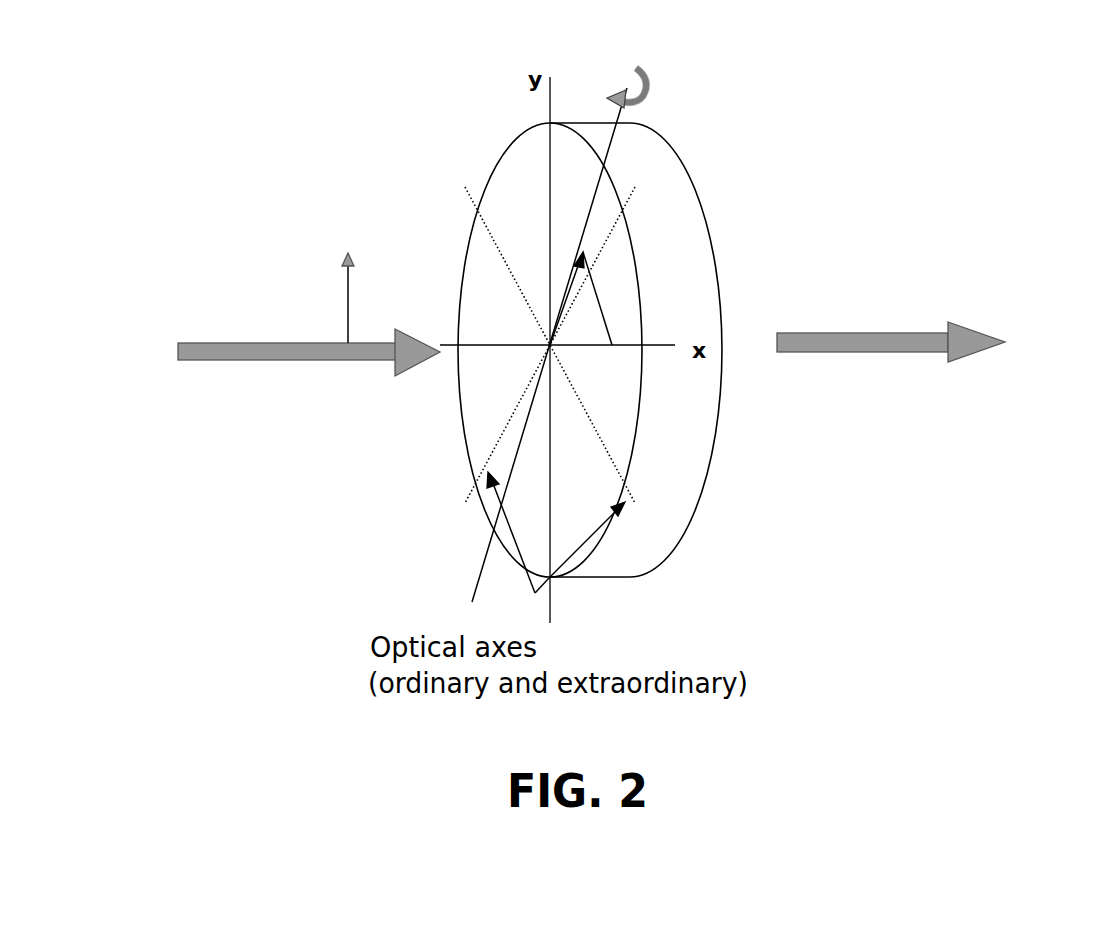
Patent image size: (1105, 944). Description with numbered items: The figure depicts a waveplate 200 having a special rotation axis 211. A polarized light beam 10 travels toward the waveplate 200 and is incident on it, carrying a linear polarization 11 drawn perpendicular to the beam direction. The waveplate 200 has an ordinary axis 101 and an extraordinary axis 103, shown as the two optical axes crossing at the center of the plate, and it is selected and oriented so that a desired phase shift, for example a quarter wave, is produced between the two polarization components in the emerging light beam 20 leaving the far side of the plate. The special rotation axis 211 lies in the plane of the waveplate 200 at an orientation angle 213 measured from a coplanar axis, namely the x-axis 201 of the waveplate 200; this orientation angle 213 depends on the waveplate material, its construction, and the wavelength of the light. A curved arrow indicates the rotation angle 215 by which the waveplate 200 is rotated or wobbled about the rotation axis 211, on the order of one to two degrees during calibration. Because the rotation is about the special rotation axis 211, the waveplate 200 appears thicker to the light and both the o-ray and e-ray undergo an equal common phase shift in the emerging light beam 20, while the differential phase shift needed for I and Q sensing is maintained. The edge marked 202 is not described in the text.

The polarized light beam 10 is at (177, 352).
The linear polarization 11 is at (347, 300).
The emerging light beam 20 is at (963, 342).
The ordinary axis 101 is at (468, 192).
The extraordinary axis 103 is at (628, 198).
The waveplate 200 is at (518, 160).
The x-axis 201 is at (655, 345).
The edge of crystal plate 202 is at (550, 123).
The rotation axis 211 is at (613, 138).
The orientation angle 213 is at (600, 308).
The rotation angle 215 is at (645, 95).